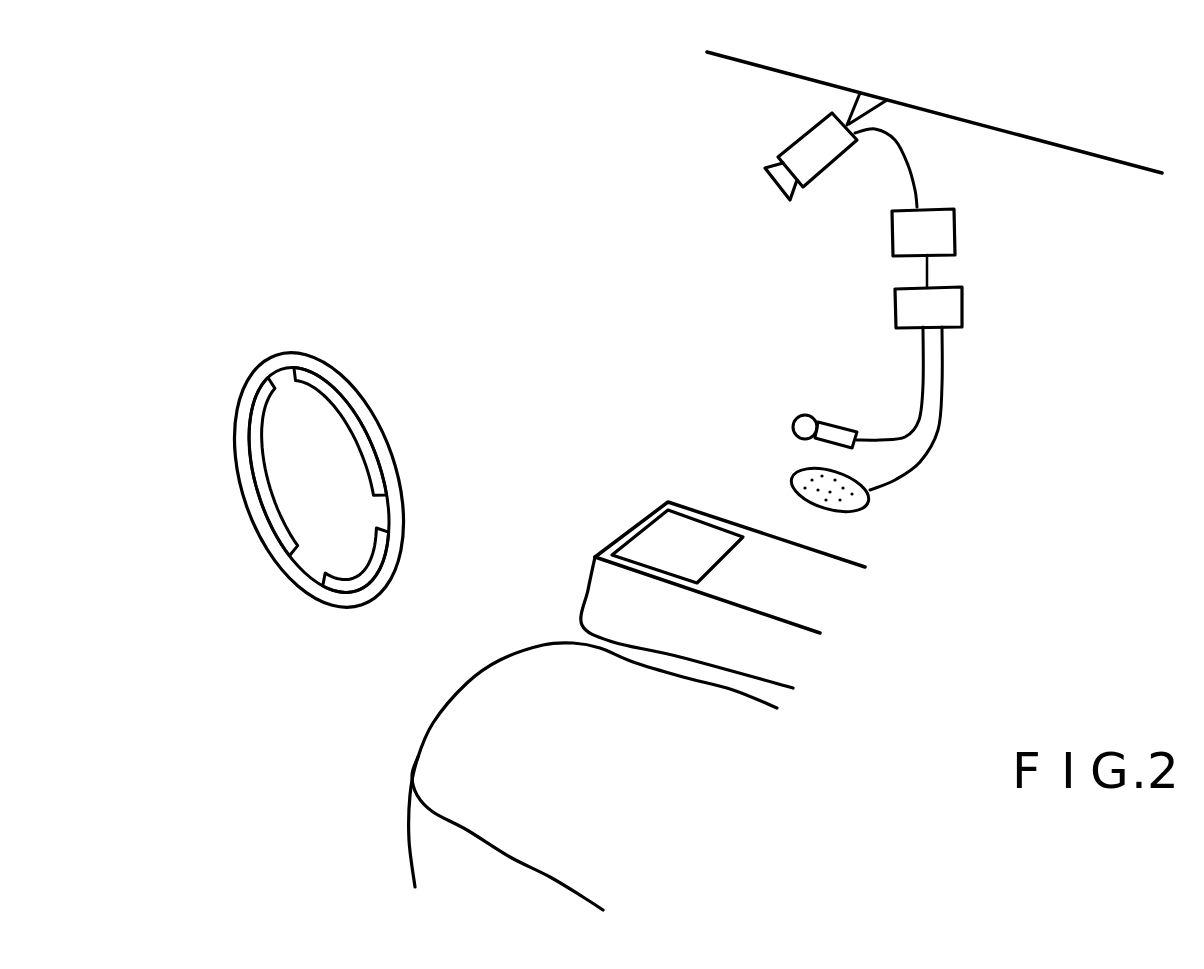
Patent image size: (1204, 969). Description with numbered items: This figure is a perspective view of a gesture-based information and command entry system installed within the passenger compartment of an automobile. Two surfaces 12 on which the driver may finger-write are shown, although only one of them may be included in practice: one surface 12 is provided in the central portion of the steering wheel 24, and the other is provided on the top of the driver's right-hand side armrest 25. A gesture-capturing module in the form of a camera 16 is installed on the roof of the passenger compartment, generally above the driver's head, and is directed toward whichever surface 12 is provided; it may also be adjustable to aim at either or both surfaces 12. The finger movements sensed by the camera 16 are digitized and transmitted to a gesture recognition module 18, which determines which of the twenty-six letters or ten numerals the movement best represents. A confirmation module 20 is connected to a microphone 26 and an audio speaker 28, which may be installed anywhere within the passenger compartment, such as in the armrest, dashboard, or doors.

The surface 12 is at (662, 540).
The camera 16 is at (813, 149).
The gesture recognition module 18 is at (923, 232).
The confirmation module 20 is at (928, 307).
The steering wheel 24 is at (283, 360).
The armrest 25 is at (807, 597).
The microphone 26 is at (832, 423).
The audio speaker 28 is at (870, 507).